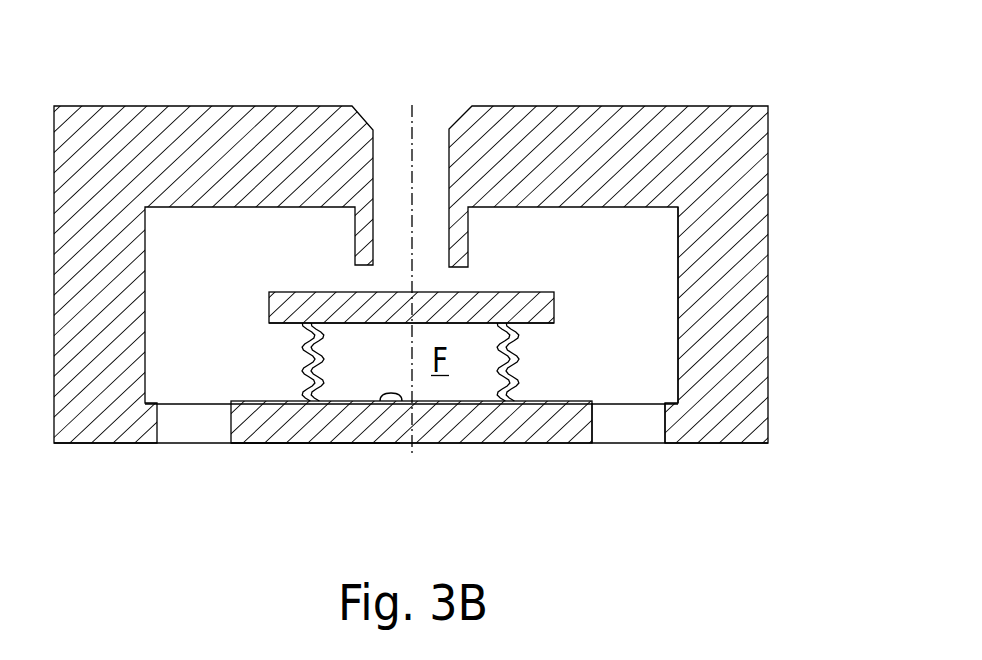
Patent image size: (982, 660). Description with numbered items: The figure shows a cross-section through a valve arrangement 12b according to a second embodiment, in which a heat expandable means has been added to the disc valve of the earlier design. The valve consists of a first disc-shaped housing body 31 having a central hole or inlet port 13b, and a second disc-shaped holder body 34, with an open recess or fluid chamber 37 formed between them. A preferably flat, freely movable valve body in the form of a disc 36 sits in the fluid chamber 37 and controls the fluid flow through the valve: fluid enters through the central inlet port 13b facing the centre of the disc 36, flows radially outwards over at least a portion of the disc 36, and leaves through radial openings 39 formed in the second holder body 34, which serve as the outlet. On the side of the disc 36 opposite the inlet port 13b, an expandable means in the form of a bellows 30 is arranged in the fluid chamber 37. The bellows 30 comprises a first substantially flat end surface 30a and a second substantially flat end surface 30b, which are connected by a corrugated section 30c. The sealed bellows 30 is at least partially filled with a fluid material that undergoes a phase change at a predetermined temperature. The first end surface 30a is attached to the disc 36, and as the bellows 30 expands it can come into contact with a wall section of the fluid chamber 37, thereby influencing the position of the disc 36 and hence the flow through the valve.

The valve arrangement 12b is at (491, 250).
The central hole or inlet port 13b is at (427, 155).
The first disc-shaped housing body 31 is at (597, 138).
The valve body 36 is at (318, 303).
The fluid chamber 37 is at (660, 340).
The bellows 30 is at (491, 276).
The first end surface 30a is at (355, 323).
The second end surface 30b is at (398, 400).
The corrugated section 30c is at (323, 371).
The second disc-shaped holder body 34 is at (270, 427).
The radial openings 39 is at (642, 428).